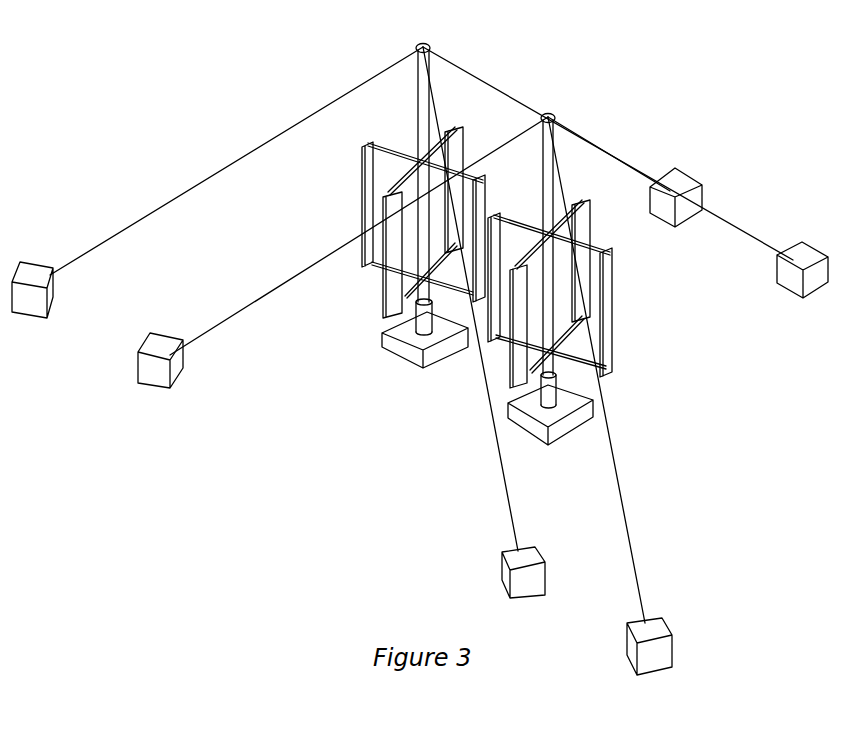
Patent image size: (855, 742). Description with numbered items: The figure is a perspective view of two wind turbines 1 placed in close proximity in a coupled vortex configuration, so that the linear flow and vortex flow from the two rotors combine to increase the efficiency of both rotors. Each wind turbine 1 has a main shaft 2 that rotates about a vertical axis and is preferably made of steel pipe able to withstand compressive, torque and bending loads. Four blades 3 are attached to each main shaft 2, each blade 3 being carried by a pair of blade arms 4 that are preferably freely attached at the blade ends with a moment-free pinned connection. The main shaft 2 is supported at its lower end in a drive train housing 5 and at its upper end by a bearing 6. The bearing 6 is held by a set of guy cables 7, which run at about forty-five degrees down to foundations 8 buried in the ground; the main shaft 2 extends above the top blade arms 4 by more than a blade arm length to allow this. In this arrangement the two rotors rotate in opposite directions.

The wind turbine 1 is at (375, 56).
The main shaft 2 is at (417, 78).
The blade 3 is at (361, 174).
The blade arm 4 is at (410, 154).
The drive train housing 5 is at (405, 354).
The bearing 6 is at (421, 42).
The guy cables 7 is at (186, 188).
The foundations 8 is at (30, 263).